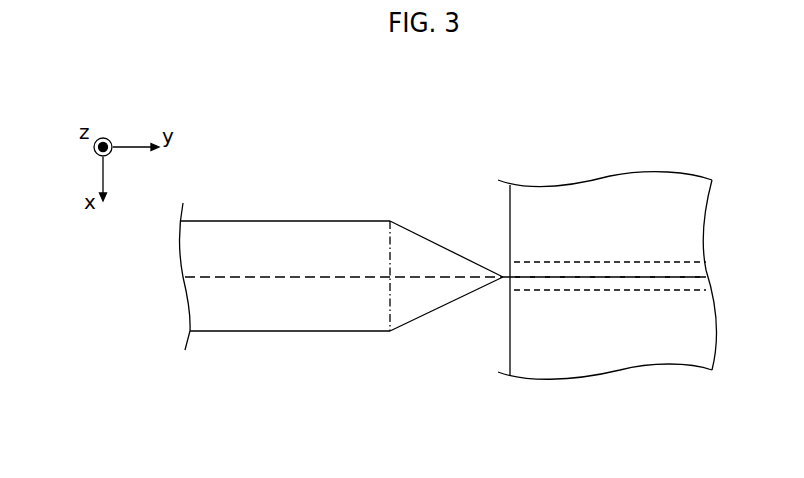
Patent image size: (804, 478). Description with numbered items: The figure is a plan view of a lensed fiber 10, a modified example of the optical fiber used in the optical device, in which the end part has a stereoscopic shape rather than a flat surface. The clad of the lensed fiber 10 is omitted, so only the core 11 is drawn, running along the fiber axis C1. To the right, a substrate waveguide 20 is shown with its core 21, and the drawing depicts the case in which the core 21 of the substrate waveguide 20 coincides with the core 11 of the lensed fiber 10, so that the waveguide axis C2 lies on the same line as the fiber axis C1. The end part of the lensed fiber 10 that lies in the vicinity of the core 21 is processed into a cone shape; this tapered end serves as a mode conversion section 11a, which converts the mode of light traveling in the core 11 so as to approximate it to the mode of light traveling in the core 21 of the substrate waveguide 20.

The lensed fiber 10 is at (443, 220).
The core 11 is at (280, 221).
The mode conversion section 11a is at (440, 246).
The central axis of optical fiber C1 is at (363, 276).
The substrate waveguide 20 is at (565, 251).
The core 21 is at (525, 292).
The central axis of waveguide core C2 is at (552, 279).